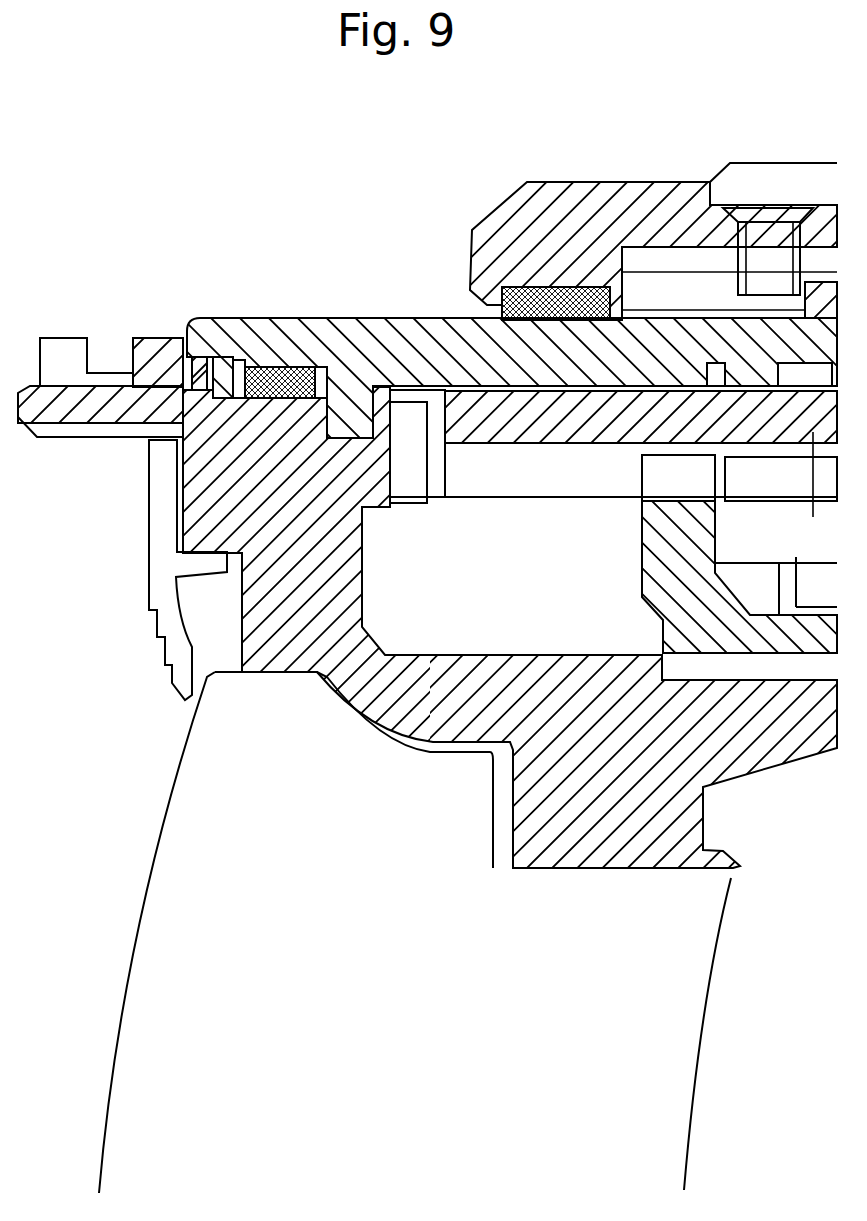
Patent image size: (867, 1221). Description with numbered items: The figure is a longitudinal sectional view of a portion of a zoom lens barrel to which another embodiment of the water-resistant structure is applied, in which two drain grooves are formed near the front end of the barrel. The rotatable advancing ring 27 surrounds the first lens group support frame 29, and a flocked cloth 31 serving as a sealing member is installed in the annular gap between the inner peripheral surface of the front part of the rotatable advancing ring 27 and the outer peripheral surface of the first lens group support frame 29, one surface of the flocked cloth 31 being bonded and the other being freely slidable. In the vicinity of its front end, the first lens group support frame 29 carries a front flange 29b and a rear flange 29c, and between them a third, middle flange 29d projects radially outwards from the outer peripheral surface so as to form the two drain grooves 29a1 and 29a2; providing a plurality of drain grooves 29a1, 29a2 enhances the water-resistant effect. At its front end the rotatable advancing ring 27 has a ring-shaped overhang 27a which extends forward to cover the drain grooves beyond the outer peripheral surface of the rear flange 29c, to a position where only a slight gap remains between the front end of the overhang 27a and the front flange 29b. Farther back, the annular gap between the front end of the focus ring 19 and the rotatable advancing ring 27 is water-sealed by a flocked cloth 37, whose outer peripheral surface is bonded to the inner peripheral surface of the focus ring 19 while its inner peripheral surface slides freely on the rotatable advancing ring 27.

The focus ring 19 is at (579, 210).
The rotatable advancing ring 27 is at (385, 330).
The overhang 27a is at (197, 366).
The first lens group support frame 29 is at (200, 492).
The drain groove 29a1 is at (186, 362).
The drain groove 29a2 is at (223, 366).
The front flange 29b is at (143, 338).
The rear flange 29c is at (238, 362).
The third (middle) flange 29d is at (205, 368).
The flocked cloth 31 is at (292, 362).
The flocked cloth 37 is at (522, 285).